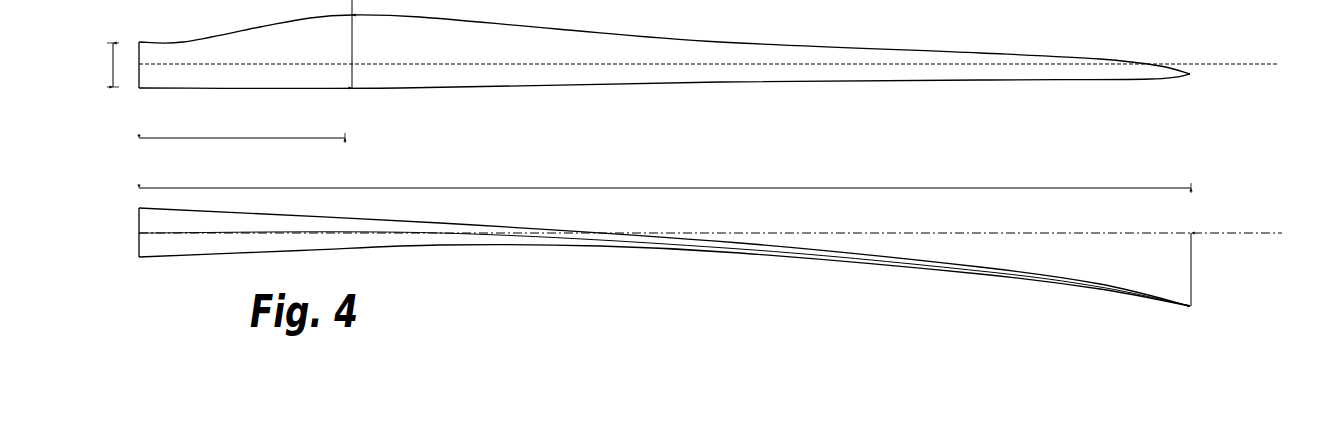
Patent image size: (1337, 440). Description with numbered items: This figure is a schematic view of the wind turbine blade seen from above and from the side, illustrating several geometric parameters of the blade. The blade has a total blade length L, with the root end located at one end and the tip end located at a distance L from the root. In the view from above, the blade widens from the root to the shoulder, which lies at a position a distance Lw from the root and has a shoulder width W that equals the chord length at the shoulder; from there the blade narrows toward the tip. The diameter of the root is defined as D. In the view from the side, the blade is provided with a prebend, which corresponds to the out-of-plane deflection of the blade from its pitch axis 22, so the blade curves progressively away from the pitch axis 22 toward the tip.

The pitch axis 22 is at (557, 64).
The root diameter D is at (105, 65).
The shoulder width W is at (367, 44).
The shoulder position Lw is at (242, 126).
The total blade length L is at (665, 177).